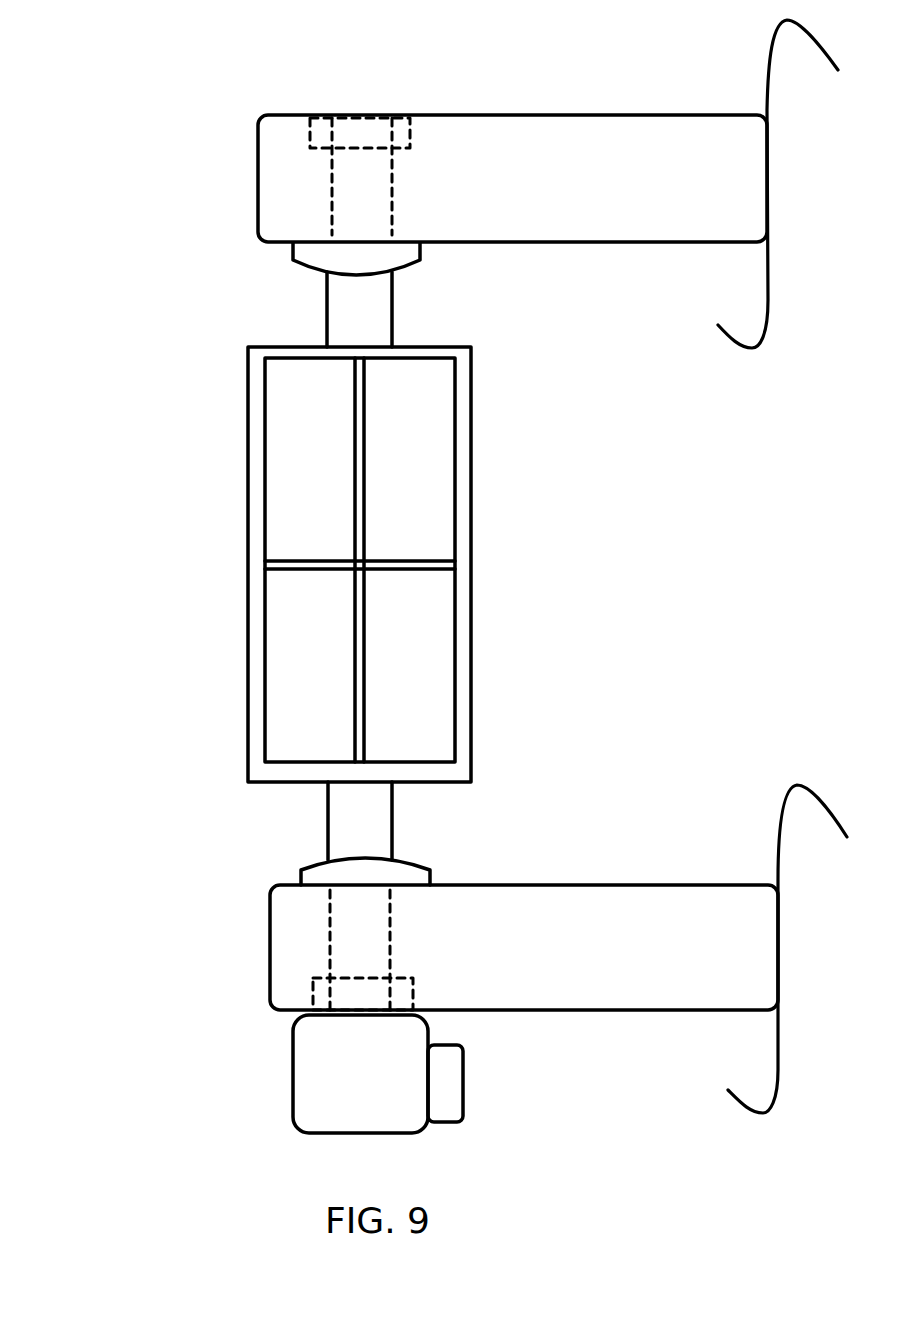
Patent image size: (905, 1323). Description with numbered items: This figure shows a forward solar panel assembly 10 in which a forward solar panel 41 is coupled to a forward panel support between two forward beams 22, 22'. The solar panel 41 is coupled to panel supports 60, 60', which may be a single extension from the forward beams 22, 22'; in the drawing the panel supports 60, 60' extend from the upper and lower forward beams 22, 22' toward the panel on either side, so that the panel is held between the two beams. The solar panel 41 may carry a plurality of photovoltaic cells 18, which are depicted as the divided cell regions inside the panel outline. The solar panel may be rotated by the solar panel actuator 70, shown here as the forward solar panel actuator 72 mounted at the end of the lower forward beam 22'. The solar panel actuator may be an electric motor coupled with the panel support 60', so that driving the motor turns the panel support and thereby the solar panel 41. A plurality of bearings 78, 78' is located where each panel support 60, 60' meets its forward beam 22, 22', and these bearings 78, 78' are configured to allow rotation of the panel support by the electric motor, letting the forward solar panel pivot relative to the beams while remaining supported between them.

The assembly 10 is at (190, 130).
The forward beam 22 is at (548, 177).
The forward beam 22' is at (558, 949).
The panel support 60 is at (299, 309).
The panel support 60' is at (297, 821).
The bearing 78 is at (411, 848).
The bearing 78' is at (405, 284).
The photovoltaic cells 18 is at (422, 564).
The solar panel 41 is at (462, 605).
The solar panel actuator 70 is at (343, 1078).
The forward solar panel actuator 72 is at (318, 1063).